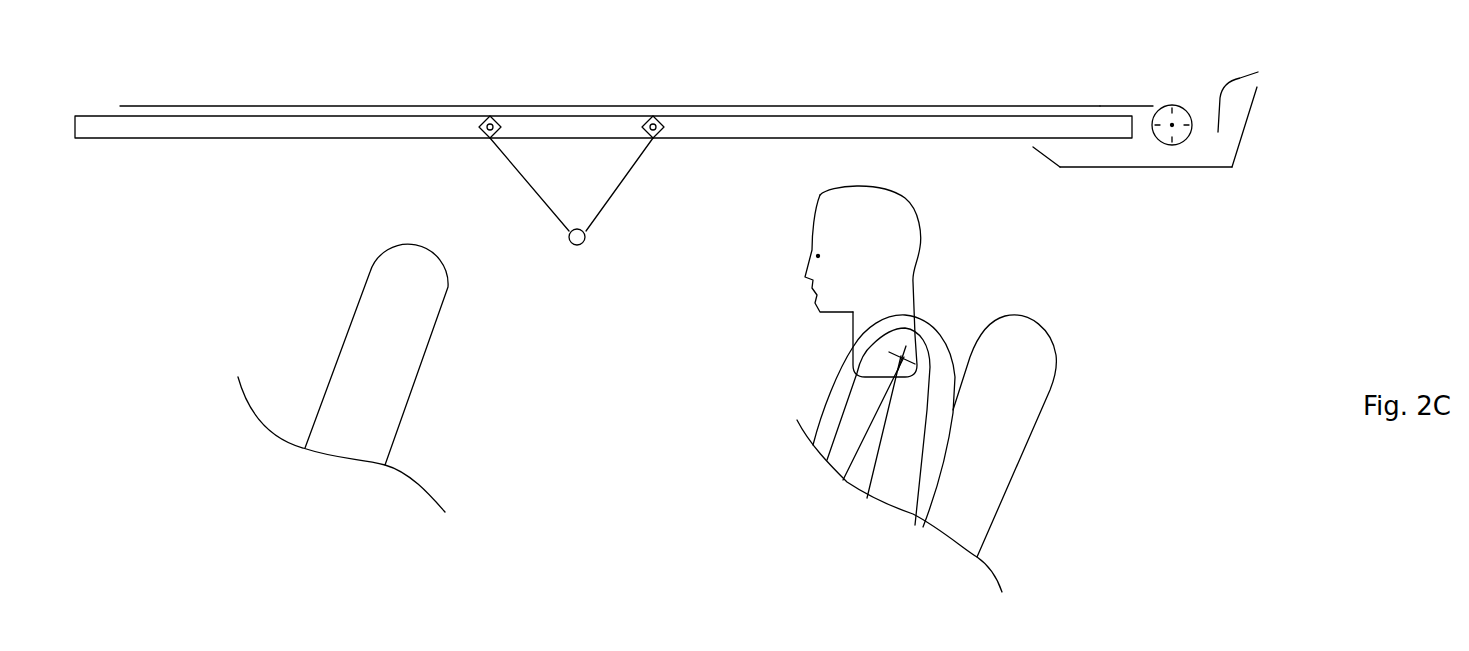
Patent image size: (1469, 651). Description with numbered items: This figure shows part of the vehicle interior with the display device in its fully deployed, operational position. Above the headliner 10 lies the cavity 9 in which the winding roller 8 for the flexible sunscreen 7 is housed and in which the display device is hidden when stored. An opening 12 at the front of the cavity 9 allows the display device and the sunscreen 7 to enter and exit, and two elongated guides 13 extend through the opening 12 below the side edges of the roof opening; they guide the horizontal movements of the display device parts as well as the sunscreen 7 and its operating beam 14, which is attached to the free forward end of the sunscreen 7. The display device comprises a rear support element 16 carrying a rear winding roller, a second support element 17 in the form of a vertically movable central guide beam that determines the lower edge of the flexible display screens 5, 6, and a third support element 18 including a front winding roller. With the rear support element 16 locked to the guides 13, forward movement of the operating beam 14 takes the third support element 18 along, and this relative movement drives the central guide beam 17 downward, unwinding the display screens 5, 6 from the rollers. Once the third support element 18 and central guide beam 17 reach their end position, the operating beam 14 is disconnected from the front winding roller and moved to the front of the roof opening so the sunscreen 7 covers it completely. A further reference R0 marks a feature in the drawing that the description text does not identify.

The display screen 5 is at (628, 178).
The display screen 6 is at (503, 167).
The sunscreen 7 is at (1142, 106).
The winding roller 8 is at (1178, 121).
The cavity 9 is at (1250, 112).
The headliner 10 is at (1207, 171).
The opening 12 is at (1033, 147).
The elongated guides 13 is at (975, 132).
The operating beam 14 is at (122, 104).
The rear support element 16 is at (657, 117).
The second support element 17 is at (580, 233).
The third support element 18 is at (490, 115).
The reference object (head) R0 is at (852, 233).